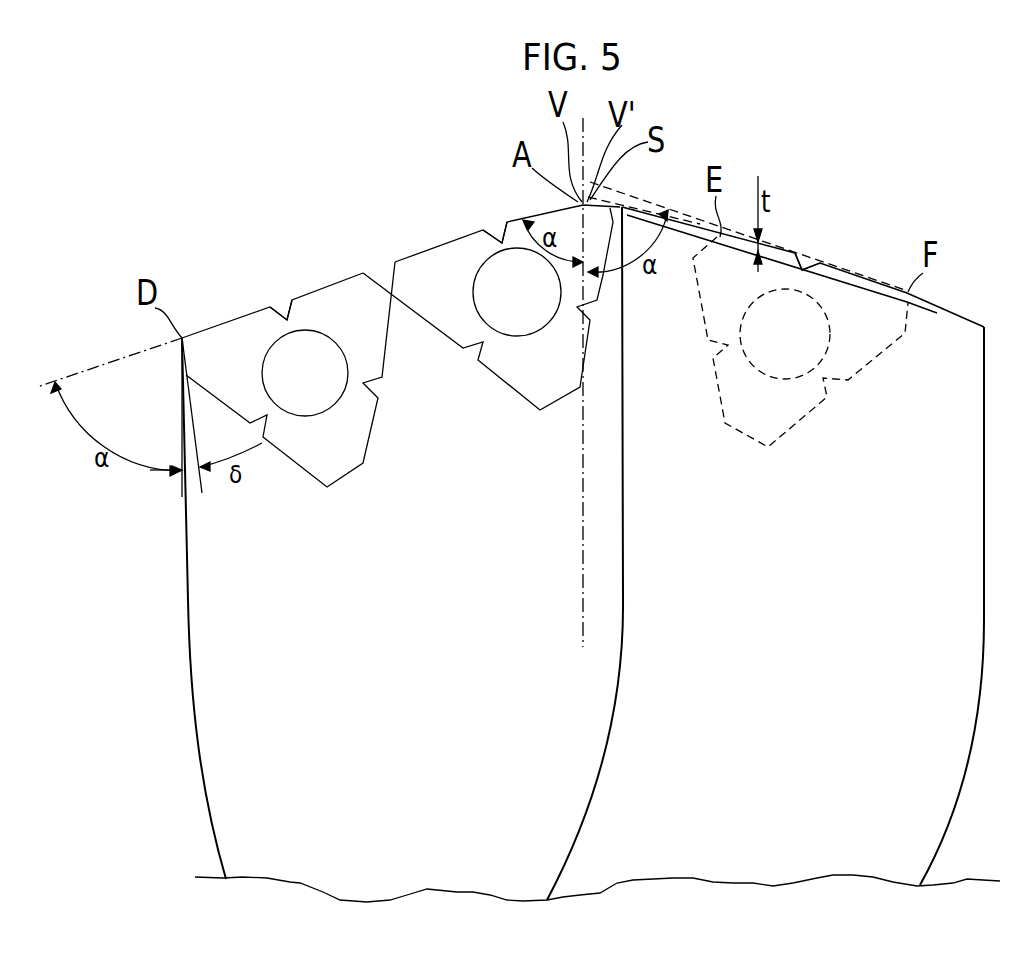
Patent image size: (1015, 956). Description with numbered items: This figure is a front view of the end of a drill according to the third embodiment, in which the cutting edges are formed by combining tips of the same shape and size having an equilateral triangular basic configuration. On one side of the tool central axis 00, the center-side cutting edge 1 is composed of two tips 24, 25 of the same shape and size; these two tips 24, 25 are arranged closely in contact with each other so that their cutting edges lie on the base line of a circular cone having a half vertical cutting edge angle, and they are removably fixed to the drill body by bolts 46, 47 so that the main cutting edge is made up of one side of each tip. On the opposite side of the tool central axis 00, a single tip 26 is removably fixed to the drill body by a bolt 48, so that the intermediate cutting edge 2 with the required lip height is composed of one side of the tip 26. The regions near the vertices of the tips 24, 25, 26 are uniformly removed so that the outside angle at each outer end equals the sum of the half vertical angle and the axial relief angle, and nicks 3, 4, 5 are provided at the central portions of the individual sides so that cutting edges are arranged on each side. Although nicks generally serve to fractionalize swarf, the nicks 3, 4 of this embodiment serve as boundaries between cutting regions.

The center-side cutting edge 1 is at (433, 247).
The intermediate cutting edge 2 is at (867, 277).
The nick 3 is at (500, 230).
The nick 4 is at (283, 305).
The nick 5 is at (803, 268).
The tip 24 is at (302, 472).
The tip 25 is at (505, 388).
The tip 26 is at (784, 440).
The bolt 46 is at (327, 413).
The bolt 47 is at (538, 337).
The bolt 48 is at (753, 360).
The tool central axis 00 is at (583, 492).